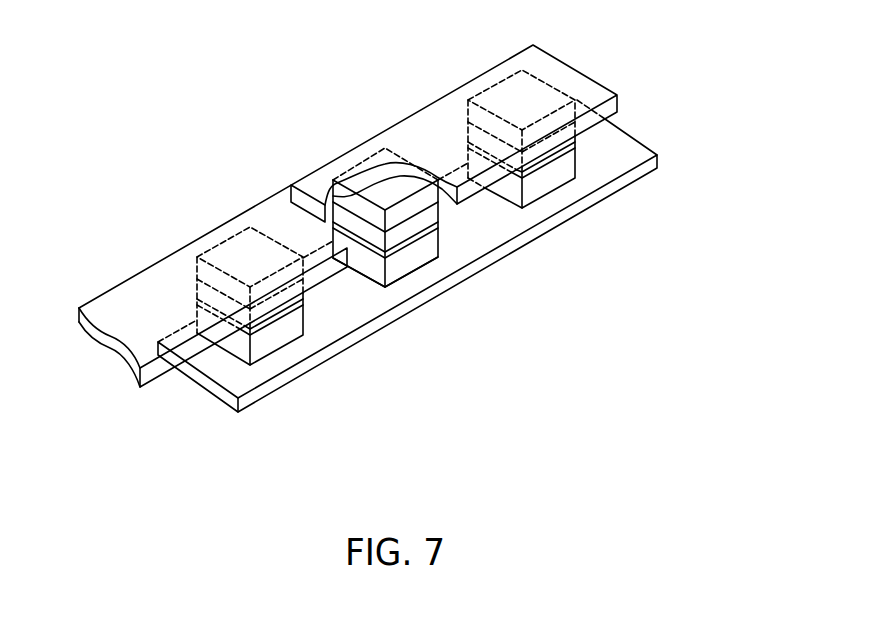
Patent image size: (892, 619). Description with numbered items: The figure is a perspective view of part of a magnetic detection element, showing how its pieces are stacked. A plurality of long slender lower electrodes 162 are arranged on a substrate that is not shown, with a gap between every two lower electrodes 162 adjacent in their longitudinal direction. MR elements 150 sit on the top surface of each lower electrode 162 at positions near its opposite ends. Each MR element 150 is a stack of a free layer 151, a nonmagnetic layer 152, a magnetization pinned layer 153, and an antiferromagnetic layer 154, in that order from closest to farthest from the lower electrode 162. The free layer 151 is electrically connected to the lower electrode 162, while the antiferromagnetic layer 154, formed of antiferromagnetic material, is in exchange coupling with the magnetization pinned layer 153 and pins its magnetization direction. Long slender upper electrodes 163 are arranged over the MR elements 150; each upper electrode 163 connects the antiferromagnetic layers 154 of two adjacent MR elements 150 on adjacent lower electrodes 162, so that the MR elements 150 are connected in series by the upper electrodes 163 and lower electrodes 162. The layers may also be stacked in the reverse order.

The MR element 150 is at (382, 249).
The free layer 151 is at (370, 279).
The nonmagnetic layer 152 is at (403, 253).
The magnetization pinned layer 153 is at (420, 230).
The antiferromagnetic layer 154 is at (428, 200).
The lower electrode 162 is at (592, 198).
The upper electrode 163 is at (432, 116).